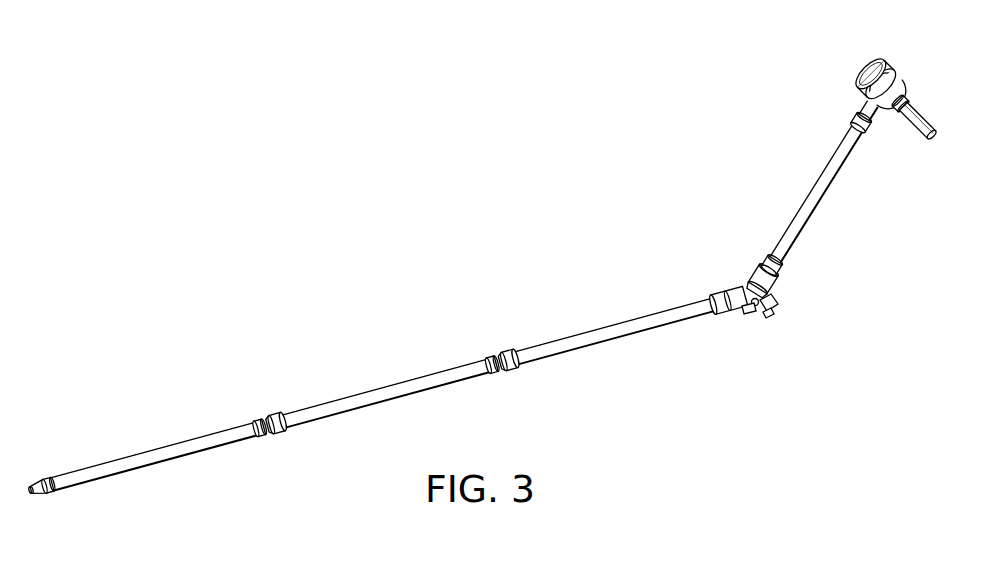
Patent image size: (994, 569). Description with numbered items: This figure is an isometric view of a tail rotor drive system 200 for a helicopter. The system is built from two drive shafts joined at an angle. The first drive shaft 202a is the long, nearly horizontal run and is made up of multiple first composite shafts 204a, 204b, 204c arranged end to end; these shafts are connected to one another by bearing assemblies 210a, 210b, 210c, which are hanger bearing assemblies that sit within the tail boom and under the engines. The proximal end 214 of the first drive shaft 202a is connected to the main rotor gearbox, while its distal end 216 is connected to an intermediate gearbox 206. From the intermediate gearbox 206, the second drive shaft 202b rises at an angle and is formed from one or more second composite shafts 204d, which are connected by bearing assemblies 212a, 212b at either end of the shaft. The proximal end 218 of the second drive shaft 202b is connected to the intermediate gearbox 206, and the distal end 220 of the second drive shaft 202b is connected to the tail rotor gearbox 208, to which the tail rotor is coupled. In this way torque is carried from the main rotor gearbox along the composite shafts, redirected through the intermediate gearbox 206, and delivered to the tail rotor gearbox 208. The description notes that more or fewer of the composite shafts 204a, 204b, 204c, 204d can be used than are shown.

The tail rotor drive system 200 is at (250, 100).
The first drive shaft 202a is at (330, 288).
The second drive shaft 202b is at (718, 190).
The composite shaft 204a is at (150, 451).
The composite shaft 204b is at (380, 389).
The composite shaft 204c is at (610, 325).
The composite shaft 204d is at (812, 180).
The intermediate gearbox 206 is at (756, 318).
The tail rotor gearbox 208 is at (893, 70).
The bearing assembly 210a is at (45, 498).
The bearing assembly 210b is at (273, 436).
The bearing assembly 210c is at (506, 372).
The bearing assembly 212a is at (760, 256).
The bearing assembly 212b is at (850, 119).
The proximal end 214 is at (32, 476).
The distal end 216 is at (716, 328).
The proximal end 218 is at (786, 282).
The distal end 220 is at (828, 73).